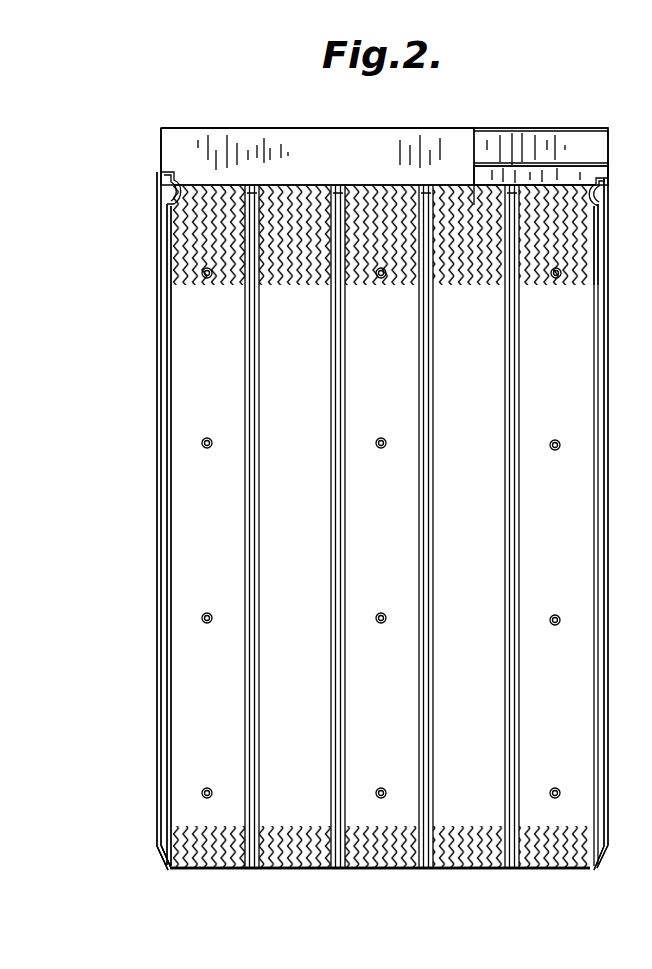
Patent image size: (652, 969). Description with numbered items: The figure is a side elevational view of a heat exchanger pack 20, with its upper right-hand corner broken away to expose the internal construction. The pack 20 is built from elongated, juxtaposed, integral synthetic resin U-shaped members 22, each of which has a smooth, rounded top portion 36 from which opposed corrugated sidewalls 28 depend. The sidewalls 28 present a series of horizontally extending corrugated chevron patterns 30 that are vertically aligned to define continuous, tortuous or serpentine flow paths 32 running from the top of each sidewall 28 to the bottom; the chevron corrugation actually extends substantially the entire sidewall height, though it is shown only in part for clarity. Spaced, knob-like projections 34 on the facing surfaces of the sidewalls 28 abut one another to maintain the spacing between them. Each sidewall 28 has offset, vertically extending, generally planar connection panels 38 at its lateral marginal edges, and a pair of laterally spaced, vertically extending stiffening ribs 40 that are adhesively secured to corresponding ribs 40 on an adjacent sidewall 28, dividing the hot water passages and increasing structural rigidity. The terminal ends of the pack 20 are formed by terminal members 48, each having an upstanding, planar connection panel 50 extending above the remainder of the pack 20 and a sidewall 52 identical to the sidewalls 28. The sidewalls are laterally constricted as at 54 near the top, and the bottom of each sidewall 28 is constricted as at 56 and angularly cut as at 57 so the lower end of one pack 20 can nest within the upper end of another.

The heat exchanger pack 20 is at (136, 378).
The U-shaped member 22 is at (578, 158).
The sidewall 28 is at (600, 229).
The corrugated chevron pattern 30 is at (185, 240).
The serpentine flow path 32 is at (480, 200).
The knob-like projection 34 is at (553, 612).
The top portion 36 is at (590, 165).
The connection panel 38 is at (158, 612).
The stiffening rib 40 is at (427, 393).
The terminal member 48 is at (488, 130).
The upstanding connection panel 50 is at (283, 138).
The terminal member sidewall 52 is at (187, 528).
The lateral constriction 54 is at (167, 208).
The bottom constriction 56 is at (172, 868).
The angular cut 57 is at (166, 858).